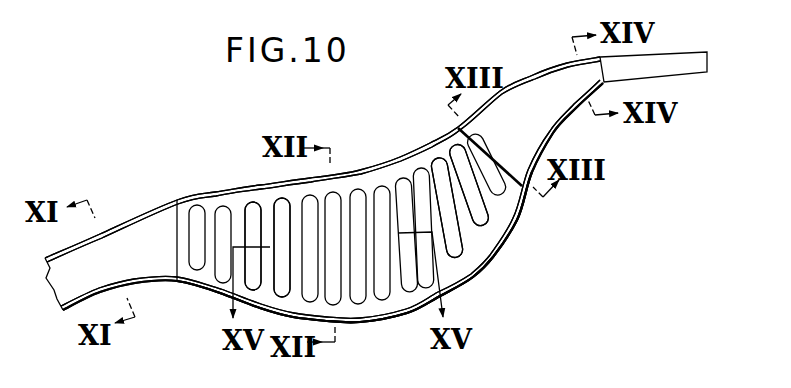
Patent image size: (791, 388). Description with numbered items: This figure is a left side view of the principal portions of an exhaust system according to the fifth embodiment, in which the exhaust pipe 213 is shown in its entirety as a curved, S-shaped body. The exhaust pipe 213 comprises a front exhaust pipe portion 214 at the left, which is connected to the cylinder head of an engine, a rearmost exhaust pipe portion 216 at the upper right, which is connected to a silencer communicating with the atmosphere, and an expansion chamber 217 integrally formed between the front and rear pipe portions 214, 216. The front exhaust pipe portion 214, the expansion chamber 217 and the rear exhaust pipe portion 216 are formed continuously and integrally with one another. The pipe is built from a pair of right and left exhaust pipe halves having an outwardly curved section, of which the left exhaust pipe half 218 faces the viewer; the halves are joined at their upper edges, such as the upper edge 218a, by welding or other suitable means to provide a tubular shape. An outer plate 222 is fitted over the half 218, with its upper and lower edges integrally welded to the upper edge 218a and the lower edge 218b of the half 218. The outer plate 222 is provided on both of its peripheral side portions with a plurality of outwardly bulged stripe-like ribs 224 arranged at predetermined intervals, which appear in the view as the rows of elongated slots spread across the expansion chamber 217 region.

The exhaust pipe 213 is at (514, 251).
The front exhaust pipe portion 214 is at (75, 294).
The rearmost exhaust pipe portion 216 is at (571, 97).
The expansion chamber 217 is at (474, 243).
The left exhaust pipe half 218 is at (157, 268).
The upper edge of exhaust pipe half 218a is at (431, 150).
The lower edge of exhaust pipe half 218b is at (466, 283).
The outer plate 222 is at (267, 205).
The outwardly bulged stripe-like ribs 224 is at (207, 208).